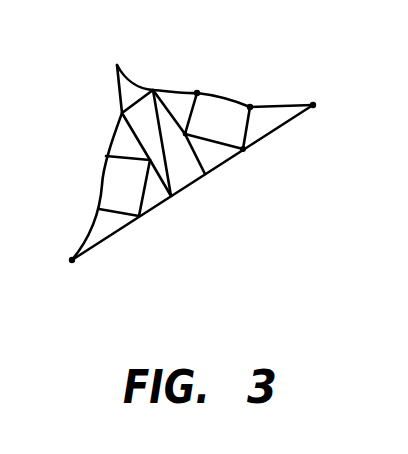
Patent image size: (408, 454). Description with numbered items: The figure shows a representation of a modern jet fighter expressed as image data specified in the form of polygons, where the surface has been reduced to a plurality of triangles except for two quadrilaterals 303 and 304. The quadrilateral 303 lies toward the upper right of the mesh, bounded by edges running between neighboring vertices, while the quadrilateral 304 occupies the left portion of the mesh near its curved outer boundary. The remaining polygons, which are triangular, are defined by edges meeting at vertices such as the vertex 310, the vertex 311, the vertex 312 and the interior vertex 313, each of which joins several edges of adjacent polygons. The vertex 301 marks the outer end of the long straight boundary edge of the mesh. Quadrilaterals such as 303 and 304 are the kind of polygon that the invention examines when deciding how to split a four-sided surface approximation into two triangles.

The boundary vertex of surface patch mesh 301 is at (320, 113).
The quadrilateral 303 is at (217, 112).
The quadrilateral 304 is at (112, 177).
The mesh vertex 310 is at (195, 85).
The mesh vertex 311 is at (262, 104).
The mesh vertex 312 is at (253, 160).
The interior mesh vertex 313 is at (181, 152).